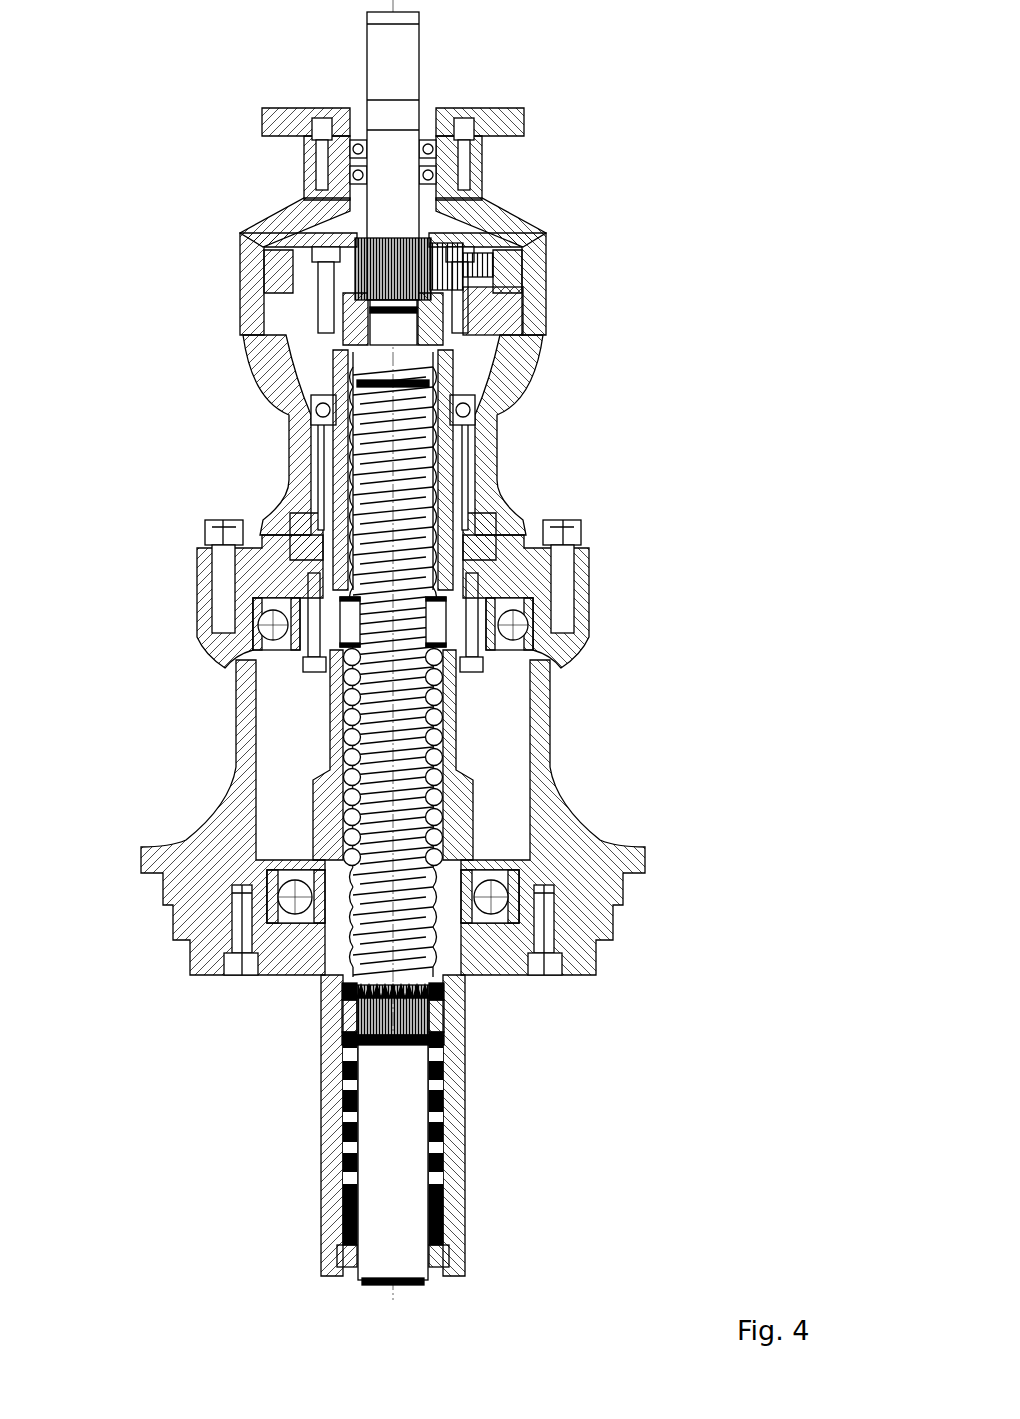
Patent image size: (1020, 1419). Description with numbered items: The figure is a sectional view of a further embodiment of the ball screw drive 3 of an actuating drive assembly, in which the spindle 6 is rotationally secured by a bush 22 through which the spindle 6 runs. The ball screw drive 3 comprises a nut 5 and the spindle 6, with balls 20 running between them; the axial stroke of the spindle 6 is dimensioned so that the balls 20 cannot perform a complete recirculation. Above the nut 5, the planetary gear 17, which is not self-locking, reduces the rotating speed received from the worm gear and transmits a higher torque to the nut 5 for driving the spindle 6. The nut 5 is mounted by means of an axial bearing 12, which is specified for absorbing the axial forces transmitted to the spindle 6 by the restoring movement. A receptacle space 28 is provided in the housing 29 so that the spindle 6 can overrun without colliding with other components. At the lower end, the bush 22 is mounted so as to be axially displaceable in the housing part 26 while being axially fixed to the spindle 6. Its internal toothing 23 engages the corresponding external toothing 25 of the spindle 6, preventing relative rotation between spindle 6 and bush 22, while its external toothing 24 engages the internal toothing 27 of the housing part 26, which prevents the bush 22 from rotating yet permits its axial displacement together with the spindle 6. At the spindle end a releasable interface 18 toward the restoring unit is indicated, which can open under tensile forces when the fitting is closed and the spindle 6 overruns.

The ball screw drive 3 is at (175, 568).
The nut 5 is at (450, 727).
The spindle 6 is at (403, 740).
The axial bearing 12 is at (493, 518).
The planetary gear 17 is at (208, 265).
The releasable interface 18 is at (470, 1296).
The balls 20 is at (437, 813).
The bush 22 is at (437, 1012).
The internal toothing 23 is at (343, 1007).
The external toothing 24 is at (343, 1031).
The external toothing 25 is at (437, 1032).
The housing part 26 is at (457, 1107).
The internal toothing 27 is at (343, 1100).
The receptacle space 28 is at (403, 370).
The housing 29 is at (483, 435).